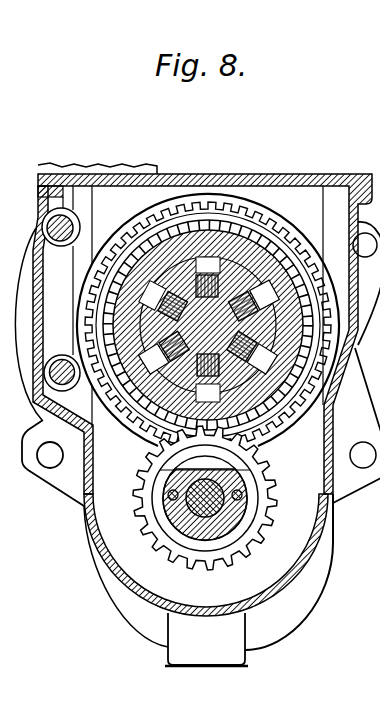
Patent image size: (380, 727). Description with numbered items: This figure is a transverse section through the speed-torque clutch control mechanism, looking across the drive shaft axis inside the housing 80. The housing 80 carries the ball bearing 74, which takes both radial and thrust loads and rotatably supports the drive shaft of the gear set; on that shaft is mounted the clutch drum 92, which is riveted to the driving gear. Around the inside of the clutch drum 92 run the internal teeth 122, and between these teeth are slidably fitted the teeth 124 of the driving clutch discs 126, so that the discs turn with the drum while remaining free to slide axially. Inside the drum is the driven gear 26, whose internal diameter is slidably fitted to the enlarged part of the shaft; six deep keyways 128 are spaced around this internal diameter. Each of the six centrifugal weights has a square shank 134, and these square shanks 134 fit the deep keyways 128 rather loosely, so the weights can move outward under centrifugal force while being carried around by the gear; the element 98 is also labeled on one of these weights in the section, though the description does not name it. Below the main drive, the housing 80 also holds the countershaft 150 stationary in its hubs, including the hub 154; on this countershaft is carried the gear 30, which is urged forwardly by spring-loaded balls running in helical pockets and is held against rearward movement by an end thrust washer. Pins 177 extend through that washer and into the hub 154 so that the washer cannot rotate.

The driven gear 26 is at (307, 292).
The gear 30 is at (278, 483).
The ball bearing 74 is at (166, 306).
The housing 80 is at (331, 522).
The clutch drum 92 is at (264, 226).
The roller 98 is at (207, 279).
The internal teeth 122 is at (266, 232).
The teeth 124 is at (272, 242).
The driving clutch discs 126 is at (303, 272).
The deep keyways 128 is at (257, 293).
The square shank 134 is at (208, 378).
The countershaft 150 is at (226, 471).
The hub 154 is at (244, 517).
The pins 177 is at (244, 494).